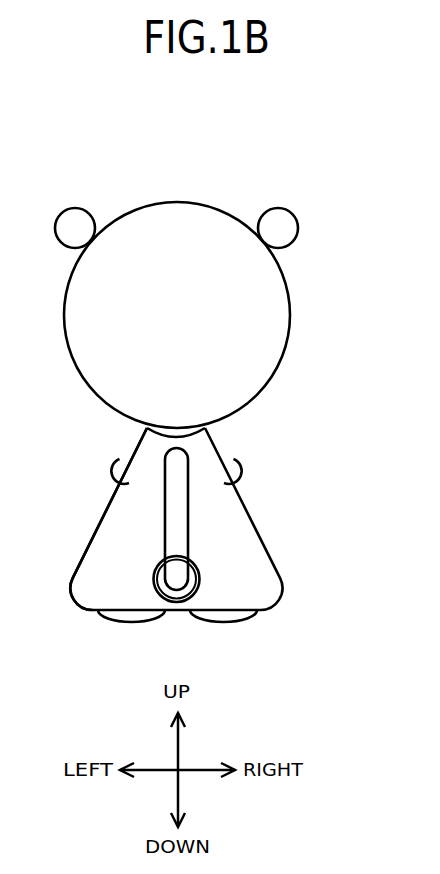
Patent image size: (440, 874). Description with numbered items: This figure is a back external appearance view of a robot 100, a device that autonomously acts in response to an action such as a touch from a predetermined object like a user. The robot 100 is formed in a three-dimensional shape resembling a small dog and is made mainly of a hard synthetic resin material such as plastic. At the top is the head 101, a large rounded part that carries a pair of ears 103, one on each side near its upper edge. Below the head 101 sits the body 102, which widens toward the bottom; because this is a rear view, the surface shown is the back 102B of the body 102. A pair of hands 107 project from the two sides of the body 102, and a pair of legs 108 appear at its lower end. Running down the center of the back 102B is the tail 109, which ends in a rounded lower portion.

The robot 100 is at (180, 163).
The head 101 is at (291, 318).
The body 102 is at (257, 522).
The body side surface 102B is at (152, 528).
The ear 103 is at (75, 208).
The arm 107 is at (120, 461).
The foot 108 is at (107, 620).
The slot 109 is at (190, 488).